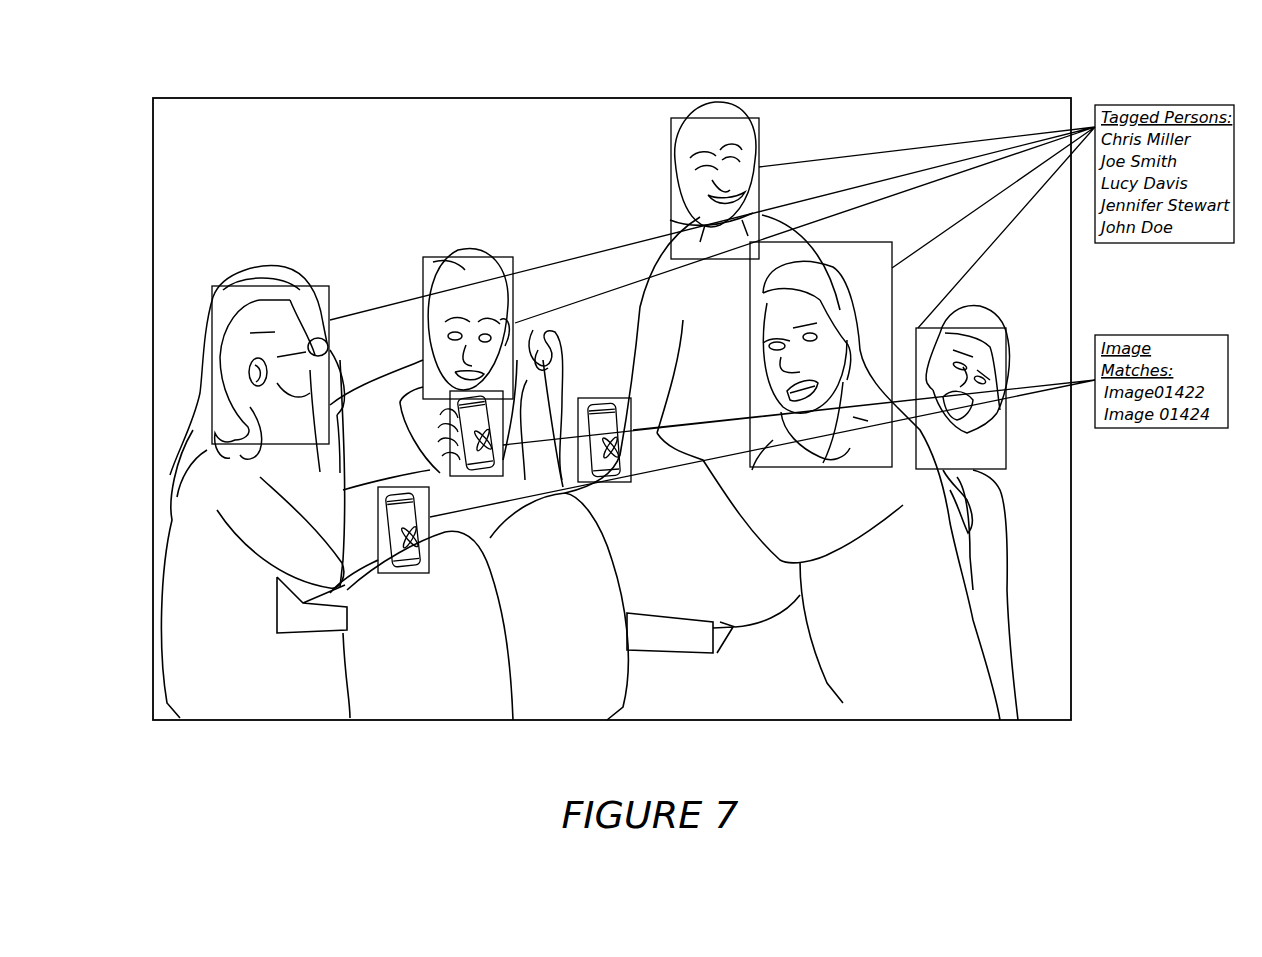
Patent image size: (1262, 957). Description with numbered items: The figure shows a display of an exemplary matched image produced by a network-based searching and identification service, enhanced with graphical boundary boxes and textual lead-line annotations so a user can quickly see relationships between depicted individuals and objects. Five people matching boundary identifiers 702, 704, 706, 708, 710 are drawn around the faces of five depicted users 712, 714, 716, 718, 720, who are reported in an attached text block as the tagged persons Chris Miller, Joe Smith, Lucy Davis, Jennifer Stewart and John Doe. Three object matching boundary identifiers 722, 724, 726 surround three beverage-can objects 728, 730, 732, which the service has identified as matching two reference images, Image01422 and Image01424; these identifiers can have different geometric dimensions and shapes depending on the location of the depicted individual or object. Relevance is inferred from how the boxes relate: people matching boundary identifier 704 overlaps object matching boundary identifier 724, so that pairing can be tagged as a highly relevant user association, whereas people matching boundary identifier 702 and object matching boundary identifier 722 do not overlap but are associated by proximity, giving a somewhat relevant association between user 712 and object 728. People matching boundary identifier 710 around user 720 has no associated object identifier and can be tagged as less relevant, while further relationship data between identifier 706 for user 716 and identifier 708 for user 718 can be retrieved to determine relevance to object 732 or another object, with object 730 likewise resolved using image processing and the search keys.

The people matching boundary identifier 702 is at (342, 565).
The people matching boundary identifier 704 is at (455, 257).
The people matching boundary identifier 706 is at (740, 123).
The people matching boundary identifier 708 is at (843, 305).
The people matching boundary identifier 710 is at (1000, 320).
The user 712 is at (270, 372).
The user 714 is at (440, 318).
The user 716 is at (707, 137).
The user 718 is at (797, 290).
The user 720 is at (1000, 330).
The object matching boundary identifier 722 is at (407, 497).
The object matching boundary identifier 724 is at (503, 391).
The object matching boundary identifier 726 is at (603, 408).
The object 728 is at (387, 488).
The object 730 is at (510, 255).
The object 732 is at (592, 398).